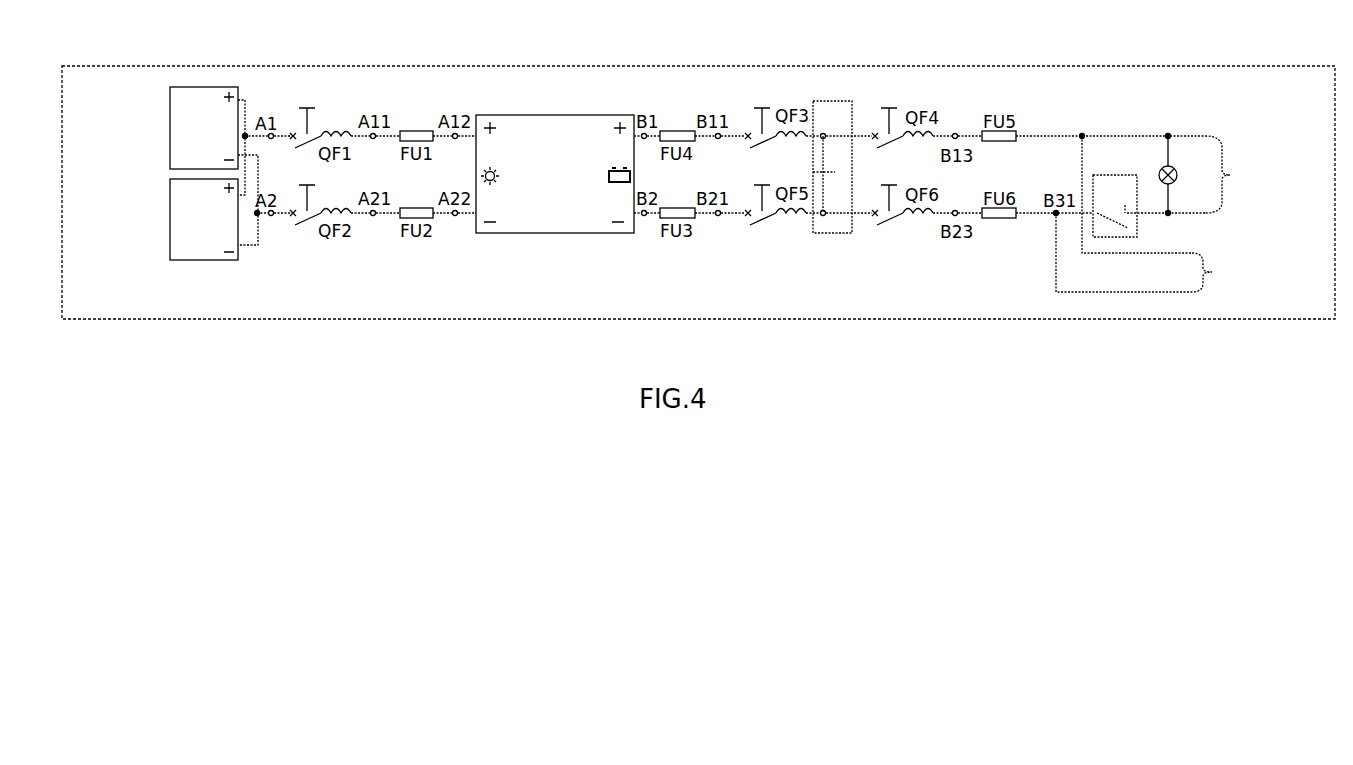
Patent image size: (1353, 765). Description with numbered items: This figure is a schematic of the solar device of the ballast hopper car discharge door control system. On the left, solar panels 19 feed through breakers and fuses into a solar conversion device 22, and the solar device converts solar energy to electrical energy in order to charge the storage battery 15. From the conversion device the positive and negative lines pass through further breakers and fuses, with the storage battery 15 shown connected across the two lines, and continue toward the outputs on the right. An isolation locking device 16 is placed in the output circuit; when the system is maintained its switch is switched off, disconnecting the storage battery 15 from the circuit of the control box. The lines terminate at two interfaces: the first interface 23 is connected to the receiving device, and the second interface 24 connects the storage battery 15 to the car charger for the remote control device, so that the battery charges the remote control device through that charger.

The solar panel 19 is at (170, 222).
The solar conversion device 22 is at (540, 115).
The storage battery 15 is at (830, 101).
The isolation locking device 16 is at (1117, 175).
The first interface 23 is at (1230, 175).
The second interface 24 is at (1212, 272).